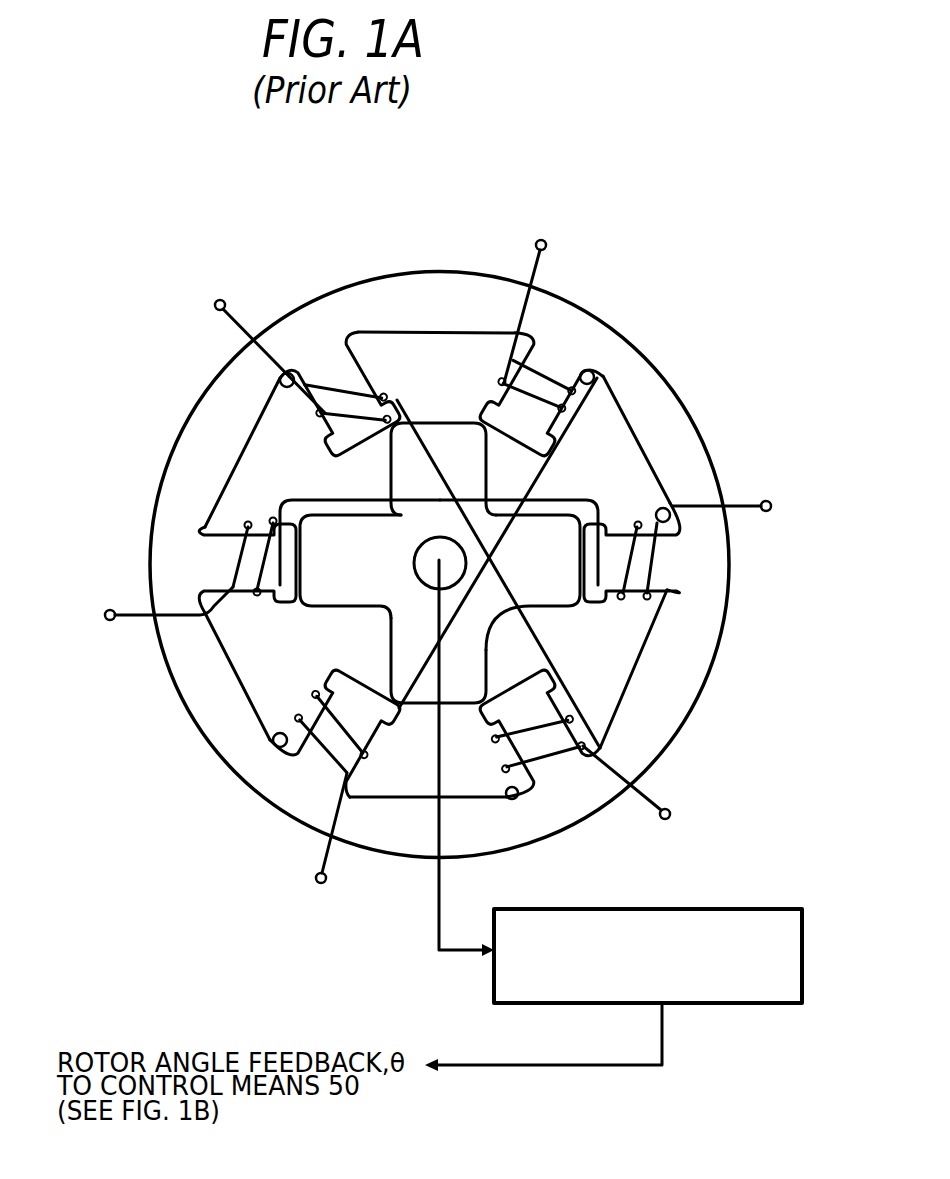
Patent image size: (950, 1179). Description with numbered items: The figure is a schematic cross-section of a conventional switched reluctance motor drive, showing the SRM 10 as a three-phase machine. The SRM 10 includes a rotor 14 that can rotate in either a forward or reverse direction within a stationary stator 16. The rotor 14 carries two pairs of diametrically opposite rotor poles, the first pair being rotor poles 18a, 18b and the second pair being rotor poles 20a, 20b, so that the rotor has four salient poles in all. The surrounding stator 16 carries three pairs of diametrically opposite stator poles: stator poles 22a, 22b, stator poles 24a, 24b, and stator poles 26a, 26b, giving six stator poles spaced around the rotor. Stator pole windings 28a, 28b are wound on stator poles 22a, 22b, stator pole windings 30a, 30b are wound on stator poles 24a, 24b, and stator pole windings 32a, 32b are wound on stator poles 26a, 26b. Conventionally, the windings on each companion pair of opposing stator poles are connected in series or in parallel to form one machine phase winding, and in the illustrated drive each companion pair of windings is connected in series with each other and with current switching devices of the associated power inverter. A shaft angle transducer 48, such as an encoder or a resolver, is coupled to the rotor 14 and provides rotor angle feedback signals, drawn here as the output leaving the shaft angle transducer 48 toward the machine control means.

The SRM 10 is at (640, 290).
The rotor 14 is at (581, 603).
The stator 16 is at (213, 413).
The rotor pole 18a is at (337, 593).
The rotor pole 18b is at (598, 486).
The rotor pole 20a is at (442, 433).
The rotor pole 20b is at (423, 697).
The stator pole 22a is at (208, 536).
The stator pole 22b is at (673, 500).
The stator pole 24a is at (370, 367).
The stator pole 24b is at (507, 800).
The stator pole 26a is at (598, 378).
The stator pole 26b is at (303, 745).
The stator pole winding 28a is at (258, 595).
The stator pole winding 28b is at (657, 560).
The stator pole winding 30a is at (322, 380).
The stator pole winding 30b is at (600, 745).
The stator pole winding 32a is at (505, 378).
The stator pole winding 32b is at (323, 750).
The shaft angle transducer 48 is at (733, 1005).